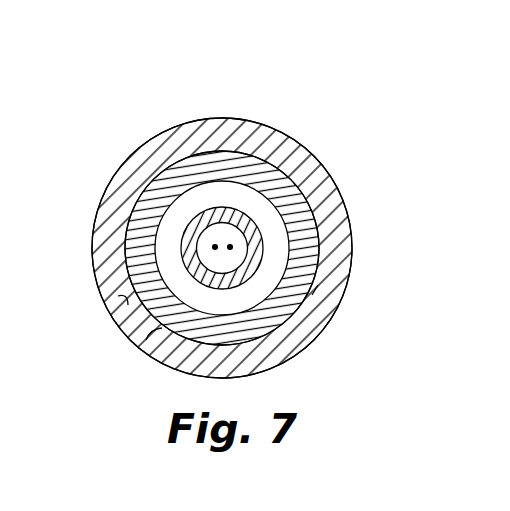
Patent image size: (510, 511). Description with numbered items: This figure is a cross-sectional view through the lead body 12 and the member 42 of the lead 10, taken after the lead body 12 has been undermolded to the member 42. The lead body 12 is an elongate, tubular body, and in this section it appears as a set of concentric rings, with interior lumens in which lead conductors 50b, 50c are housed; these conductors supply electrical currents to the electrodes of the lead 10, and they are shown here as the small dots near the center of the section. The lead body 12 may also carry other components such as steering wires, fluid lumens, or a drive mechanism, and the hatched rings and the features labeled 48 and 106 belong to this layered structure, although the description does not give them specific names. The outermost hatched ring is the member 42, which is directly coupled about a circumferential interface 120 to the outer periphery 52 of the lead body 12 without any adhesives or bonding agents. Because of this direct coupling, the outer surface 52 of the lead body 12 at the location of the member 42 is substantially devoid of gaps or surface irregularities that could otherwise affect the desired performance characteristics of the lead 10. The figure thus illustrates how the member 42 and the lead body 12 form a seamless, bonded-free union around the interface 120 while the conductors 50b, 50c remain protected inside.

The lead 10 is at (288, 96).
The member 42 is at (142, 166).
The lead body 12 is at (300, 182).
The inner tube 48 is at (322, 244).
The circumferential interface 120 is at (318, 285).
The lead conductor 50b is at (214, 247).
The lead conductor 50c is at (231, 247).
The lumen 106 is at (120, 298).
The outer periphery 52 is at (147, 342).